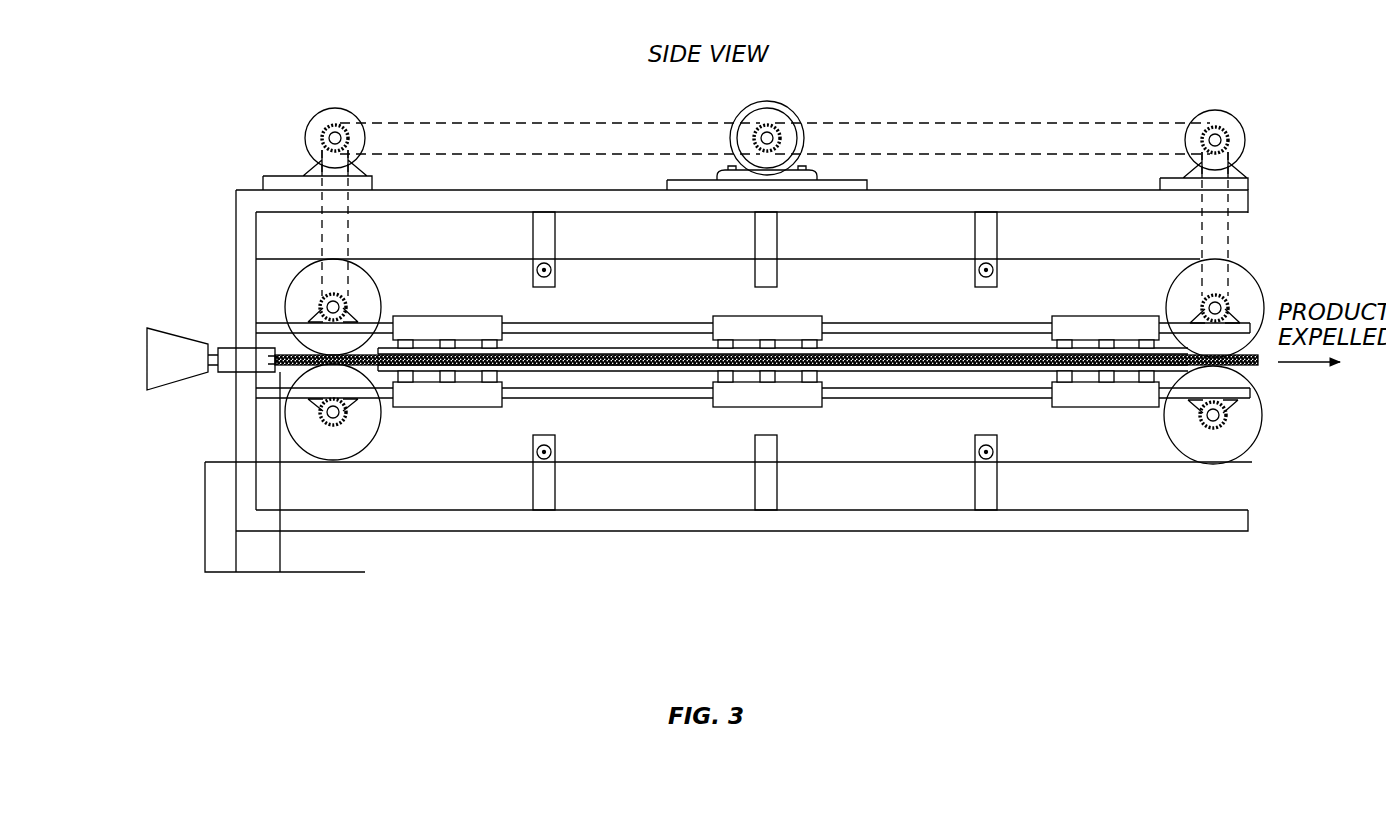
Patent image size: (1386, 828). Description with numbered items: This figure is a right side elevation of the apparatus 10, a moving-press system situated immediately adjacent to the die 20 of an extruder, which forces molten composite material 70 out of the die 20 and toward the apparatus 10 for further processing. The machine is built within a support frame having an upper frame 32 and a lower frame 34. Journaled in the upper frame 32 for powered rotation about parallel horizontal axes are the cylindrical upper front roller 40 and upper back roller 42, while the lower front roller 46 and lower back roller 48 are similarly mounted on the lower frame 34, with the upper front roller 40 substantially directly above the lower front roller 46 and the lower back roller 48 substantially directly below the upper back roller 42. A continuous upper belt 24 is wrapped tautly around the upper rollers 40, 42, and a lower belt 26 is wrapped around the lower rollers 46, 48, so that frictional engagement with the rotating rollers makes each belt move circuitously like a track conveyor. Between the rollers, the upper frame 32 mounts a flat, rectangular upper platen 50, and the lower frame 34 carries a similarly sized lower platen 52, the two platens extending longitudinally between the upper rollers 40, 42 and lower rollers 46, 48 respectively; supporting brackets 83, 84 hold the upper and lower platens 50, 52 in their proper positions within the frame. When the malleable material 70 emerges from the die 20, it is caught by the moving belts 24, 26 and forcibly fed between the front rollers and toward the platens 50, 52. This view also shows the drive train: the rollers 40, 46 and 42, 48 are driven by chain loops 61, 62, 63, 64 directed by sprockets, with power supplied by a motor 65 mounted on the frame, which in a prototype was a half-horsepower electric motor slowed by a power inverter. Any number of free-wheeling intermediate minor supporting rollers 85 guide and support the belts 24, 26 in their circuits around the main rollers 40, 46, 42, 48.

The apparatus 10 is at (522, 606).
The die 20 is at (203, 328).
The upper belt 24 is at (651, 259).
The lower belt 26 is at (690, 462).
The upper frame 32 is at (254, 187).
The lower frame 34 is at (1073, 535).
The upper front roller 40 is at (305, 275).
The upper back roller 42 is at (1247, 290).
The lower front roller 46 is at (333, 452).
The lower back roller 48 is at (1213, 455).
The upper platen 50 is at (920, 347).
The lower platen 52 is at (920, 375).
The chain 61 is at (485, 122).
The chain 62 is at (948, 122).
The chain 63 is at (350, 243).
The chain 64 is at (1230, 243).
The motor 65 is at (795, 110).
The molten composite material 70 is at (1270, 378).
The supporting bracket 83 is at (652, 322).
The supporting bracket 84 is at (638, 400).
The intermediate minor supporting roller 85 is at (552, 270).